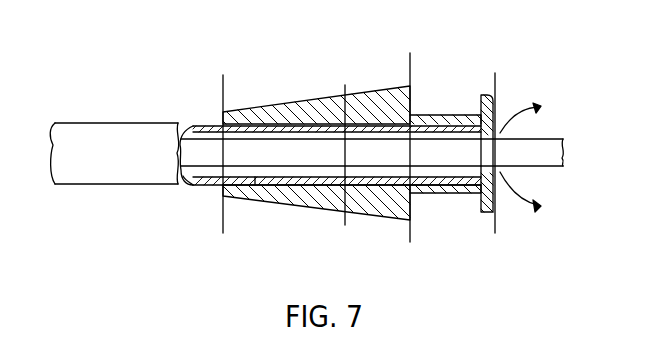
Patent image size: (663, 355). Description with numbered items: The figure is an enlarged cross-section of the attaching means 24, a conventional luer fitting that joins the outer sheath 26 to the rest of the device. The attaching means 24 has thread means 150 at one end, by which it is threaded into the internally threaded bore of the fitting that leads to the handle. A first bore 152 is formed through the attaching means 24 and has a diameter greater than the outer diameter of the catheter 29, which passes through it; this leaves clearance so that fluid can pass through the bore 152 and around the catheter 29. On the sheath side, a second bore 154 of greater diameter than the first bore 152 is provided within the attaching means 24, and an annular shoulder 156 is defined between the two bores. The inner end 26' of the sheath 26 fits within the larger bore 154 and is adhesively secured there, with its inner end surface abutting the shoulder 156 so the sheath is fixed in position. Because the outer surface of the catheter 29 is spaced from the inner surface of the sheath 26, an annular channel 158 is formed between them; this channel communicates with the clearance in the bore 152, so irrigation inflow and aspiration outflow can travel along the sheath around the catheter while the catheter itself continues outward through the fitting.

The outer sheath 26 is at (114, 127).
The inner end of the sheath 26' is at (330, 113).
The attaching means 24 is at (360, 98).
The first bore 152 is at (440, 175).
The thread means 150 is at (496, 93).
The catheter 29 is at (540, 142).
The annular channel 158 is at (196, 181).
The bore 154 is at (263, 180).
The annular shoulder 156 is at (337, 187).